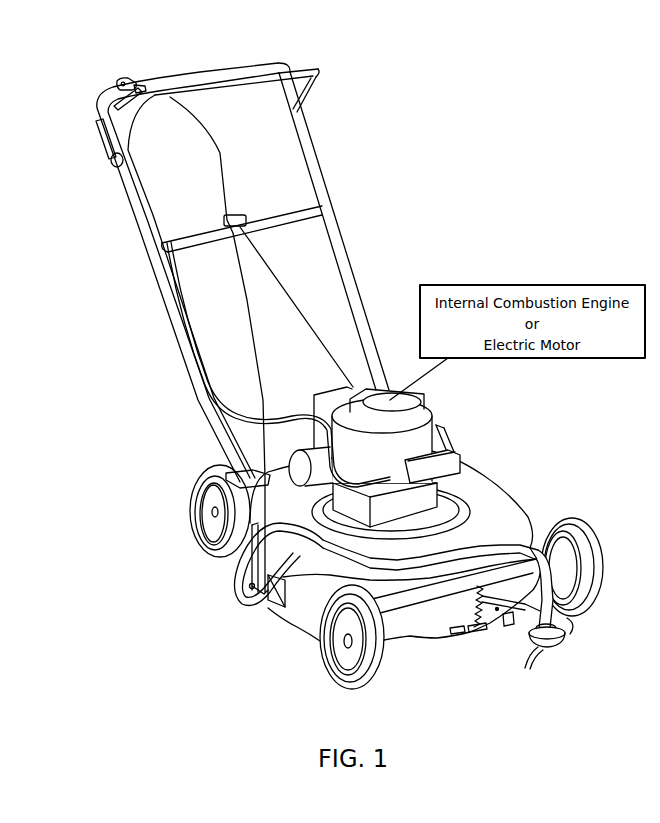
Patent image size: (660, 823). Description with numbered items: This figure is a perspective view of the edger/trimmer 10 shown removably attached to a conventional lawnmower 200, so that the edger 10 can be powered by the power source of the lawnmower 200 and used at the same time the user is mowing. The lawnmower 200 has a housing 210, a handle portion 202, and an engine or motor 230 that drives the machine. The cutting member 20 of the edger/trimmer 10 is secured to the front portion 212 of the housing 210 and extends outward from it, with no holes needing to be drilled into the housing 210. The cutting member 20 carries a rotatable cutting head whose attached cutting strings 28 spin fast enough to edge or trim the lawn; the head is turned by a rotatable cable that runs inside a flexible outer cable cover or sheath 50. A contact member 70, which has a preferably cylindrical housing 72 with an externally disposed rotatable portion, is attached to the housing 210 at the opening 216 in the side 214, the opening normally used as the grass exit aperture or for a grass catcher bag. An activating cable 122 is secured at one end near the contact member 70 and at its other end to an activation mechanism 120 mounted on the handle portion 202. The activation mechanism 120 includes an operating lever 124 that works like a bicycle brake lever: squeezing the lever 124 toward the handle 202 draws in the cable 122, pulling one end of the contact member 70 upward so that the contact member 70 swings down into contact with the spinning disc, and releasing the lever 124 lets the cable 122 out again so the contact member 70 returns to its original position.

The edger/trimmer 10 is at (485, 647).
The cutting member 20 is at (560, 652).
The cutting strings 28 is at (533, 658).
The outer cable cover or sheath 50 is at (255, 603).
The contact member 70 is at (240, 583).
The housing 72 is at (276, 607).
The activation mechanism 120 is at (133, 62).
The activating cable 122 is at (222, 153).
The operating lever 124 is at (113, 100).
The lawnmower 200 is at (511, 458).
The handle portion 202 is at (247, 66).
The housing 210 is at (528, 545).
The front portion 212 is at (413, 634).
The side 214 is at (309, 617).
The opening 216 is at (272, 578).
The engine / motor 230 is at (433, 409).